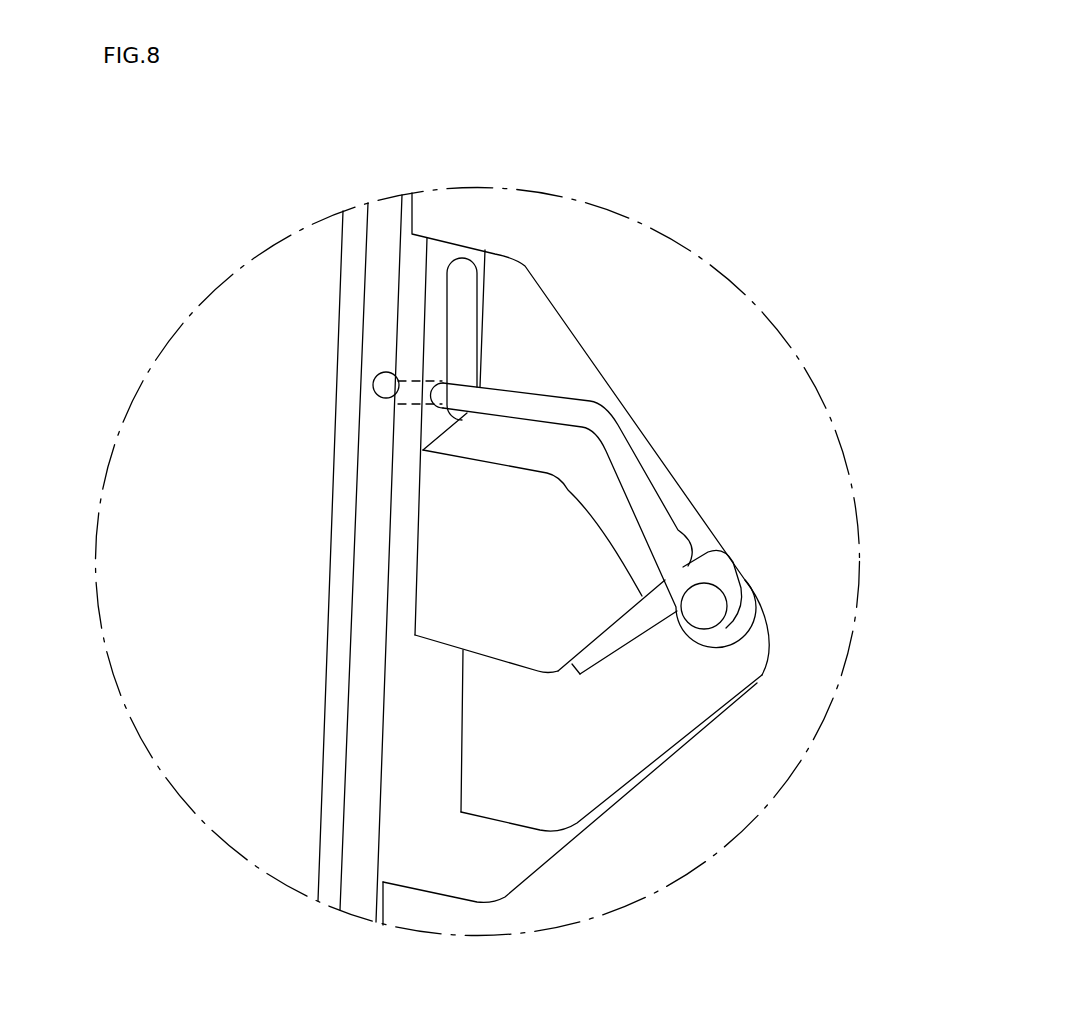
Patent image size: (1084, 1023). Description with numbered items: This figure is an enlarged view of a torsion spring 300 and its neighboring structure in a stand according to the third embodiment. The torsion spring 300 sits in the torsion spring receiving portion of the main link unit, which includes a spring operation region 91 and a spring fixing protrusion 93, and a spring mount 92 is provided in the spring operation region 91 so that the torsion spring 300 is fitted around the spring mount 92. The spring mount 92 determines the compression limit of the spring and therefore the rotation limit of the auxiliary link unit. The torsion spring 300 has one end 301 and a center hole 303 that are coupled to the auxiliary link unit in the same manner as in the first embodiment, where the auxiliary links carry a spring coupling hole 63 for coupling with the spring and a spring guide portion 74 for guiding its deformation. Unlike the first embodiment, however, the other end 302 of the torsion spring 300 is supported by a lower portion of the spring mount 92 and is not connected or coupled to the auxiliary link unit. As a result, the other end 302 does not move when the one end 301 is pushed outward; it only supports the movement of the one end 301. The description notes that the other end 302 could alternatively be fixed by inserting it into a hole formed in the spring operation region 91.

The spring coupling hole 63 is at (397, 370).
The spring guide portion 74 is at (462, 278).
The spring operation region 91 is at (523, 327).
The spring mount 92 is at (517, 517).
The spring fixing protrusion 93 is at (707, 610).
The torsion spring 300 is at (652, 497).
The one end 301 is at (386, 398).
The other end 302 is at (612, 637).
The center hole 303 is at (750, 603).